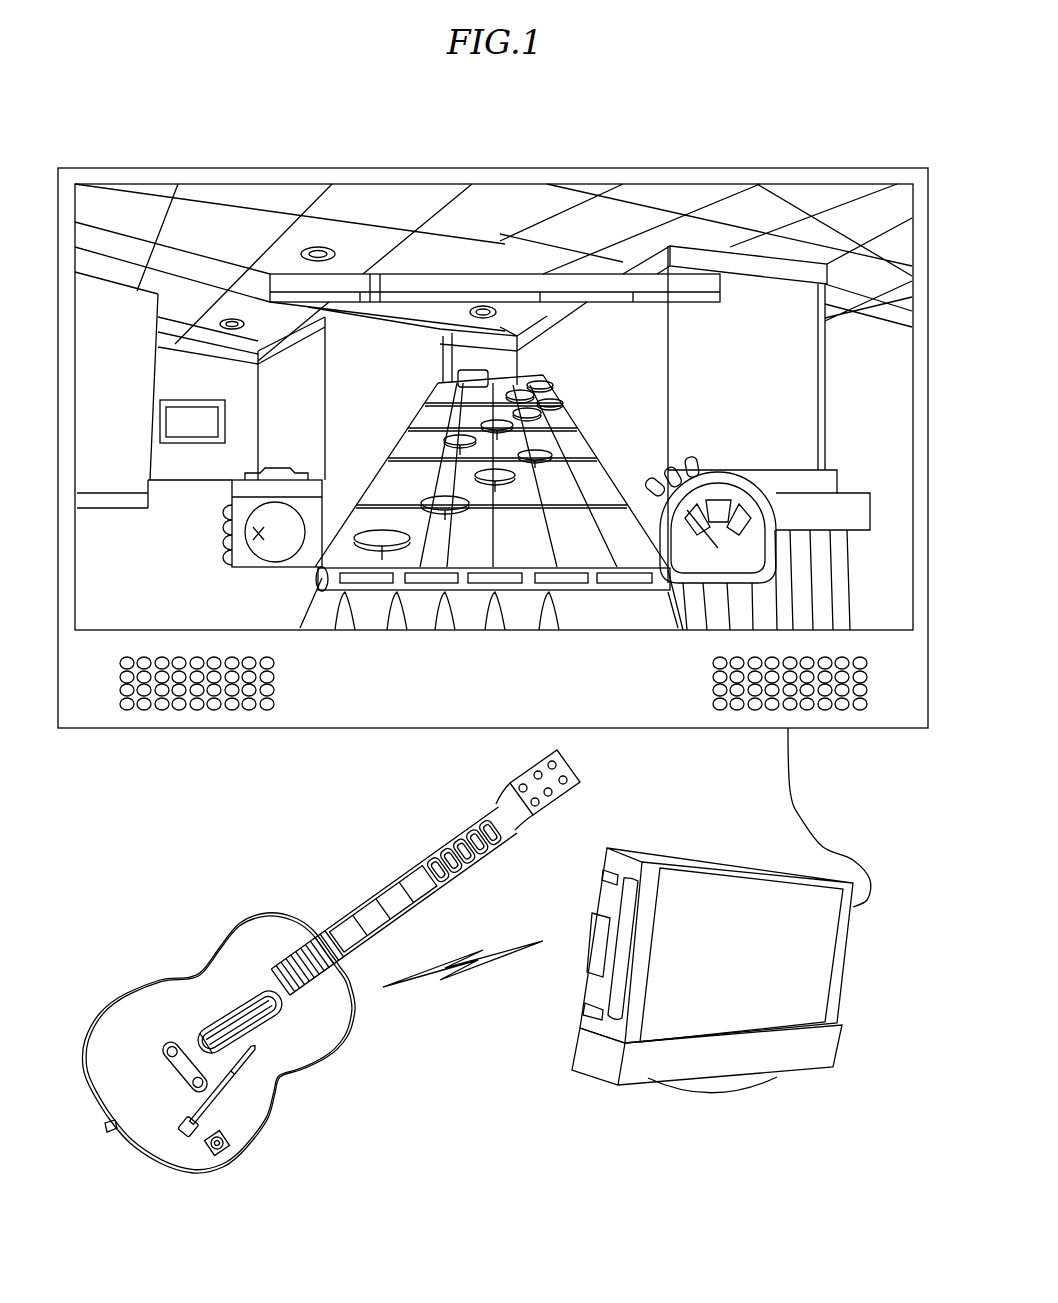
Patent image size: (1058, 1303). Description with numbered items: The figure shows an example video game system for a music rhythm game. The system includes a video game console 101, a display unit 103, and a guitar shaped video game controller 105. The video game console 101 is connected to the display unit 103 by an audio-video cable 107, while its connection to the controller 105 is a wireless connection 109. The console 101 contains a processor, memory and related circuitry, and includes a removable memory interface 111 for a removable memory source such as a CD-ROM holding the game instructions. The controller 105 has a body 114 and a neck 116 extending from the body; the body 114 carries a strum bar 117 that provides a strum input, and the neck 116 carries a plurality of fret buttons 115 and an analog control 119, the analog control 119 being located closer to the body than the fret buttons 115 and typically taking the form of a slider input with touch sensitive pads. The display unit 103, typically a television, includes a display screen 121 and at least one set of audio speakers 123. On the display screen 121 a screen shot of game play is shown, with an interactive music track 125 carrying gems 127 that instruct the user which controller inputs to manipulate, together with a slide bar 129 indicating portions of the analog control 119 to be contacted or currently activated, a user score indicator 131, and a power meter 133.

The video game console 101 is at (712, 987).
The display unit 103 is at (345, 730).
The video game controller 105 is at (331, 961).
The audio-video cable 107 is at (800, 817).
The wireless connection 109 is at (457, 978).
The removable memory interface 111 is at (623, 943).
The body 114 is at (242, 930).
The fret buttons 115 is at (464, 851).
The neck 116 is at (418, 872).
The strum bar 117 is at (233, 1010).
The analog control 119 is at (383, 909).
The display screen 121 is at (542, 632).
The audio speakers 123 is at (268, 678).
The interactive music track 125 is at (388, 453).
The gems 127 is at (428, 500).
The slide bar 129 is at (590, 268).
The user score indicator 131 is at (273, 473).
The power meter 133 is at (718, 488).